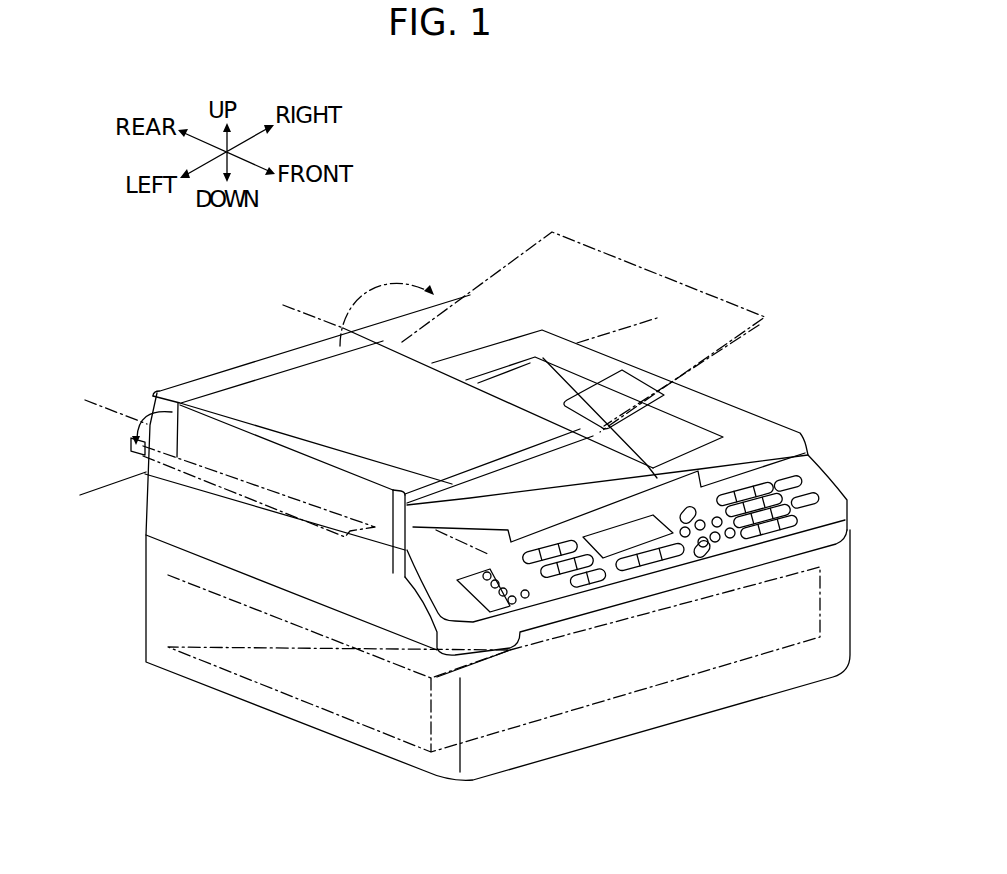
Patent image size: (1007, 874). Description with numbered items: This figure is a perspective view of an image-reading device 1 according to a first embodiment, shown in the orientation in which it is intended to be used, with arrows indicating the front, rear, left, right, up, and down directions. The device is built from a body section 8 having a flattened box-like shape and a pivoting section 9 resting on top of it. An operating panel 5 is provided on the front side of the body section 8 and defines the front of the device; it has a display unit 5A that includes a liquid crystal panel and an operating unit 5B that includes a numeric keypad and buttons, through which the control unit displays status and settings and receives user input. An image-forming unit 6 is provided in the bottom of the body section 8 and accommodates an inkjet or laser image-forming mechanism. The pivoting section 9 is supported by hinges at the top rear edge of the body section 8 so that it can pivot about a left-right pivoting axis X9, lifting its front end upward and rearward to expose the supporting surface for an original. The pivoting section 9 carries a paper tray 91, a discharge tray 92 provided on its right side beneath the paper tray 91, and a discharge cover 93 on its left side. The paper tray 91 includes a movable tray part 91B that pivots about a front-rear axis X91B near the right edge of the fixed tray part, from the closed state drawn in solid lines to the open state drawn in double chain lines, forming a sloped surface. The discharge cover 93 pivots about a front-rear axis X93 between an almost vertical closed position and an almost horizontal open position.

The image-reading device 1 is at (336, 269).
The operating panel 5 is at (821, 498).
The display unit 5A is at (627, 538).
The operating unit 5B is at (768, 522).
The image-forming unit 6 is at (695, 640).
The body section 8 is at (851, 562).
The pivoting section 9 is at (766, 416).
The paper tray 91 is at (694, 297).
The movable tray part 91B is at (250, 396).
The discharge tray 92 is at (677, 434).
The discharge cover 93 is at (212, 485).
The pivoting axis X9 is at (99, 492).
The axis X91B is at (298, 303).
The axis X93 is at (106, 409).